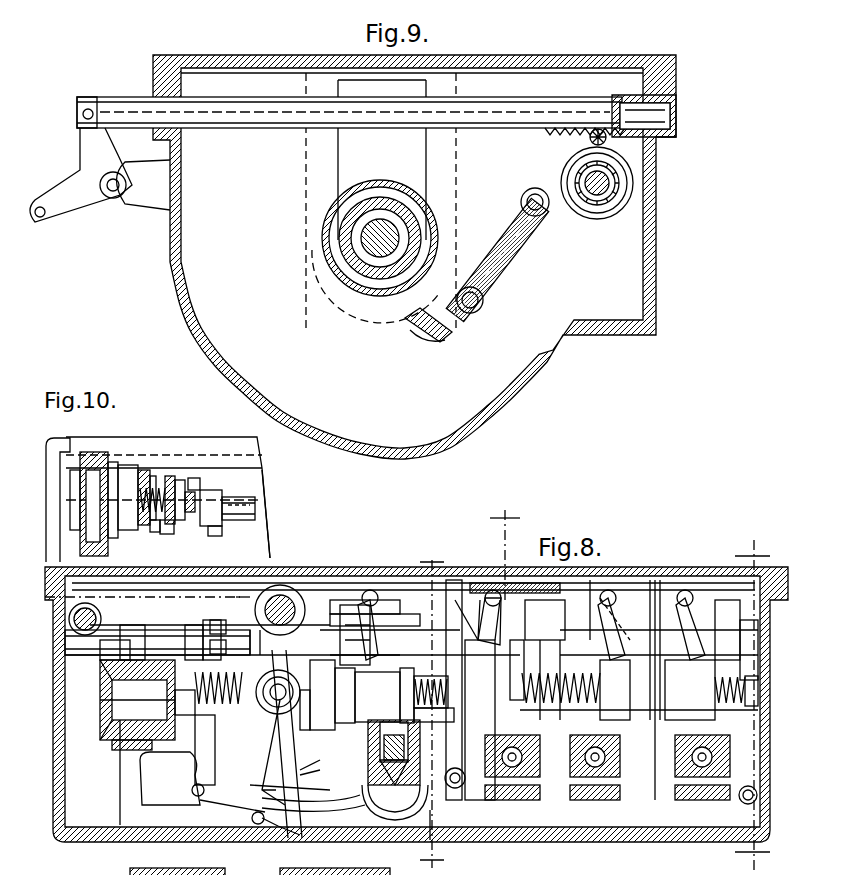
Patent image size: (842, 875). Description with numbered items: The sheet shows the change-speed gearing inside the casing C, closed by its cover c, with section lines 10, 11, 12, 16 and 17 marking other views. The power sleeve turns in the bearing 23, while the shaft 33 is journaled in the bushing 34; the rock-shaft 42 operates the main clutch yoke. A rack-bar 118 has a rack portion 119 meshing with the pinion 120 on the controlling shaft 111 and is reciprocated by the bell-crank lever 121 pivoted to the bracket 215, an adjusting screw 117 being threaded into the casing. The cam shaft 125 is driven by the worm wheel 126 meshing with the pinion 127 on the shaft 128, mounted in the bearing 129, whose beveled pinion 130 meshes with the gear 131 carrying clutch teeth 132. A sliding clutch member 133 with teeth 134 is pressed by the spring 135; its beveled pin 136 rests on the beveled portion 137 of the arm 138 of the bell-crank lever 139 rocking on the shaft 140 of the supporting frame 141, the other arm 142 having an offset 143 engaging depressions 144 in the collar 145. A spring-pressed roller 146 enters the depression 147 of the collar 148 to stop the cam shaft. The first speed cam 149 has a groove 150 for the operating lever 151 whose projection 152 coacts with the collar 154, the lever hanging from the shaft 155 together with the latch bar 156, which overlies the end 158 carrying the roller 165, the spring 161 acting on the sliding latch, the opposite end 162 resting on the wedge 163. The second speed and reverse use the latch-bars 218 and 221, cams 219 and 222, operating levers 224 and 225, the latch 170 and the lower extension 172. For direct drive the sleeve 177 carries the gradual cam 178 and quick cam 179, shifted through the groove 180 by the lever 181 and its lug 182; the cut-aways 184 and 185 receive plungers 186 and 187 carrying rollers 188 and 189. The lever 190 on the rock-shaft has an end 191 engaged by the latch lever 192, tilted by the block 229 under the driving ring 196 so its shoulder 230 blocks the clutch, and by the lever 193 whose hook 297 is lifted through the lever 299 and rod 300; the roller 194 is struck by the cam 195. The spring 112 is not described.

In FIG. 8, the section line 10— 10 is at (24, 597).
In FIG. 8, the section line 11— 11 is at (432, 705).
In FIG. 8, the section line 12— 12 is at (752, 705).
In FIG. 8, the section line 16— 16 is at (484, 733).
In FIG. 8, the section line 17— 17 is at (165, 750).
In FIG. 9, the bearing 23 is at (325, 232).
In FIG. 9, the shaft 33 is at (362, 252).
In FIG. 9, the bearing-sleeve or bushing 34 is at (345, 246).
In FIG. 8, the rock-shaft 42 is at (284, 585).
In FIG. 9, the controlling shaft 111 is at (598, 130).
In FIG. 10, the controlling shaft 111 is at (240, 510).
In FIG. 8, the controlling shaft 111 is at (340, 600).
In FIG. 8, the spring 112 is at (756, 648).
In FIG. 8, the adjusting screw 117 is at (758, 790).
In FIG. 9, the rack-bar 118 is at (482, 120).
In FIG. 10, the rack-bar 118 is at (82, 540).
In FIG. 8, the rack-bar 118 is at (100, 630).
In FIG. 9, the rack portion 119 is at (522, 122).
In FIG. 8, the rack portion 119 is at (100, 618).
In FIG. 9, the pinion 120 is at (560, 132).
In FIG. 10, the pinion 120 is at (70, 495).
In FIG. 8, the pinion 120 is at (104, 660).
In FIG. 9, the bell-crank lever 121 is at (88, 158).
In FIG. 9, the cam shaft 125 is at (612, 183).
In FIG. 10, the cam shaft 125 is at (258, 496).
In FIG. 8, the cam shaft 125 is at (300, 640).
In FIG. 9, the worm wheel 126 is at (360, 292).
In FIG. 9, the pinion 127 is at (445, 344).
In FIG. 9, the shaft 128 is at (415, 322).
In FIG. 9, the bearing 129 is at (500, 268).
In FIG. 9, the beveled pinion 130 is at (586, 215).
In FIG. 9, the gear 131 is at (606, 214).
In FIG. 10, the gear 131 is at (86, 518).
In FIG. 8, the gear 131 is at (108, 732).
In FIG. 9, the clutch teeth 132 is at (628, 134).
In FIG. 10, the clutch teeth 132 is at (143, 470).
In FIG. 8, the clutch teeth 132 is at (120, 745).
In FIG. 10, the sliding clutch member 133 is at (158, 488).
In FIG. 8, the sliding clutch member 133 is at (182, 715).
In FIG. 10, the teeth 134 is at (153, 476).
In FIG. 8, the teeth 134 is at (135, 745).
In FIG. 8, the spring 135 is at (212, 722).
In FIG. 10, the beveled pin 136 is at (172, 534).
In FIG. 8, the beveled pin 136 is at (178, 678).
In FIG. 10, the beveled portion 137 is at (155, 532).
In FIG. 10, the arm 138 is at (170, 476).
In FIG. 8, the arm 138 is at (168, 650).
In FIG. 10, the bell-crank lever 139 is at (180, 480).
In FIG. 10, the shaft 140 is at (196, 480).
In FIG. 10, the supporting frame 141 is at (122, 470).
In FIG. 8, the supporting frame 141 is at (122, 806).
In FIG. 10, the arm 142 is at (190, 492).
In FIG. 8, the arm 142 is at (192, 625).
In FIG. 10, the angular offset 143 is at (255, 512).
In FIG. 8, the angular offset 143 is at (212, 620).
In FIG. 10, the depressions 144 is at (216, 530).
In FIG. 8, the depressions 144 is at (222, 646).
In FIG. 10, the collar 145 is at (210, 492).
In FIG. 8, the collar 145 is at (222, 624).
In FIG. 8, the spring pressed roller 146 is at (306, 762).
In FIG. 8, the depression 147 is at (306, 728).
In FIG. 8, the collar 148 is at (284, 668).
In FIG. 8, the first speed cam 149 is at (440, 722).
In FIG. 8, the annular groove 150 is at (440, 702).
In FIG. 8, the operating lever 151 is at (440, 688).
In FIG. 8, the projection 152 is at (498, 590).
In FIG. 8, the collar 154 is at (460, 690).
In FIG. 8, the shaft 155 is at (412, 600).
In FIG. 8, the latch bar 156 is at (515, 640).
In FIG. 8, the depressed end 158 is at (530, 800).
In FIG. 8, the spring 161 is at (520, 800).
In FIG. 8, the end 162 is at (590, 795).
In FIG. 8, the adjustable wedge 163 is at (358, 600).
In FIG. 8, the roller 165 is at (488, 700).
In FIG. 8, the latch 170 is at (610, 820).
In FIG. 8, the lower extension 172 is at (600, 800).
In FIG. 8, the sleeve 177 is at (380, 697).
In FIG. 8, the gradual rising cam 178 is at (410, 678).
In FIG. 8, the quick rising cam 179 is at (358, 676).
In FIG. 8, the groove 180 is at (330, 720).
In FIG. 8, the shifting lever 181 is at (372, 643).
In FIG. 8, the lug 182 is at (380, 626).
In FIG. 8, the cut-away portion 184 is at (400, 812).
In FIG. 8, the cut-away portion 185 is at (372, 812).
In FIG. 8, the plunger 186 is at (388, 770).
In FIG. 8, the plunger 187 is at (384, 748).
In FIG. 8, the roller 188 is at (455, 768).
In FIG. 8, the roller 189 is at (372, 740).
In FIG. 8, the lever 190 is at (288, 686).
In FIG. 8, the end 191 is at (312, 784).
In FIG. 8, the latch lever 192 is at (210, 805).
In FIG. 8, the lever 193 is at (436, 830).
In FIG. 8, the roller 194 is at (360, 808).
In FIG. 8, the cam 195 is at (252, 818).
In FIG. 8, the driving ring 196 is at (268, 826).
In FIG. 9, the bracket 215 is at (146, 195).
In FIG. 8, the latch-bar 218 is at (728, 600).
In FIG. 8, the cam 219 is at (752, 668).
In FIG. 8, the latch-bar 221 is at (548, 580).
In FIG. 8, the cam 222 is at (585, 600).
In FIG. 8, the operating lever 224 is at (700, 600).
In FIG. 8, the operating lever 225 is at (633, 640).
In FIG. 8, the block 229 is at (190, 780).
In FIG. 8, the shoulder 230 is at (288, 838).
In FIG. 8, the hook 297 is at (322, 766).
In FIG. 8, the lever 299 is at (462, 598).
In FIG. 8, the rod 300 is at (490, 600).
In FIG. 9, the casing C is at (540, 368).
In FIG. 10, the casing C is at (250, 468).
In FIG. 8, the casing C is at (640, 600).
In FIG. 9, the cover c is at (556, 56).